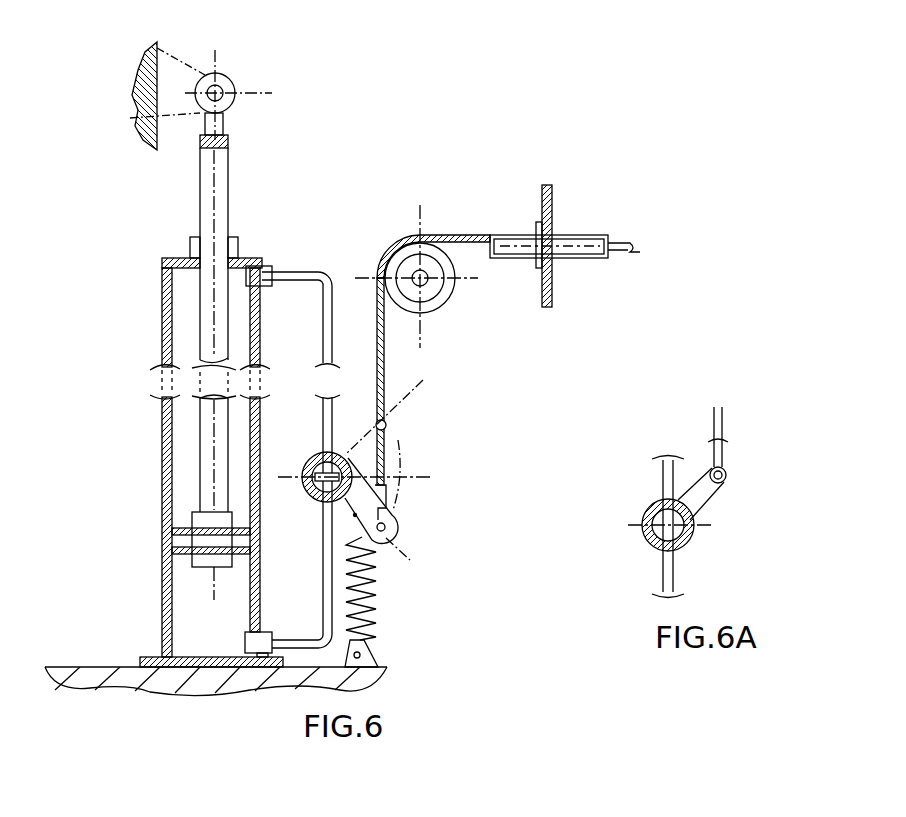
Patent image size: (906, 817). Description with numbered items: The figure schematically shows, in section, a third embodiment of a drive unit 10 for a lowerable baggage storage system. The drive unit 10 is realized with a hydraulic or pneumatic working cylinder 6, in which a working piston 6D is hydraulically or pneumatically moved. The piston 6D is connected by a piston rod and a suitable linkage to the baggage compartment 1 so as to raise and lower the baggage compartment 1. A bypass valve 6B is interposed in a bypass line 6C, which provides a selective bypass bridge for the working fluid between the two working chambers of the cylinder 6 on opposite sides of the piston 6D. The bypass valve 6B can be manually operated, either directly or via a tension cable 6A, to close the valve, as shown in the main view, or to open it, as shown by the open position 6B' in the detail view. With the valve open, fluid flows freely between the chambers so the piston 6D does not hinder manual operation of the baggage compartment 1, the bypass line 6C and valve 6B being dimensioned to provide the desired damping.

In FIG. 6, the baggage compartment 1 is at (130, 118).
In FIG. 6, the working cylinder 6 is at (133, 342).
In FIG. 6, the drive unit 10 is at (245, 402).
In FIG. 6, the tension cable 6A is at (387, 360).
In FIG. 6, the bypass valve 6B is at (363, 485).
In FIG. 6A, the open position of bypass valve 6B' is at (697, 484).
In FIG. 6, the bypass line 6C is at (372, 582).
In FIG. 6A, the bypass line 6C is at (665, 570).
In FIG. 6, the working piston 6D is at (180, 538).